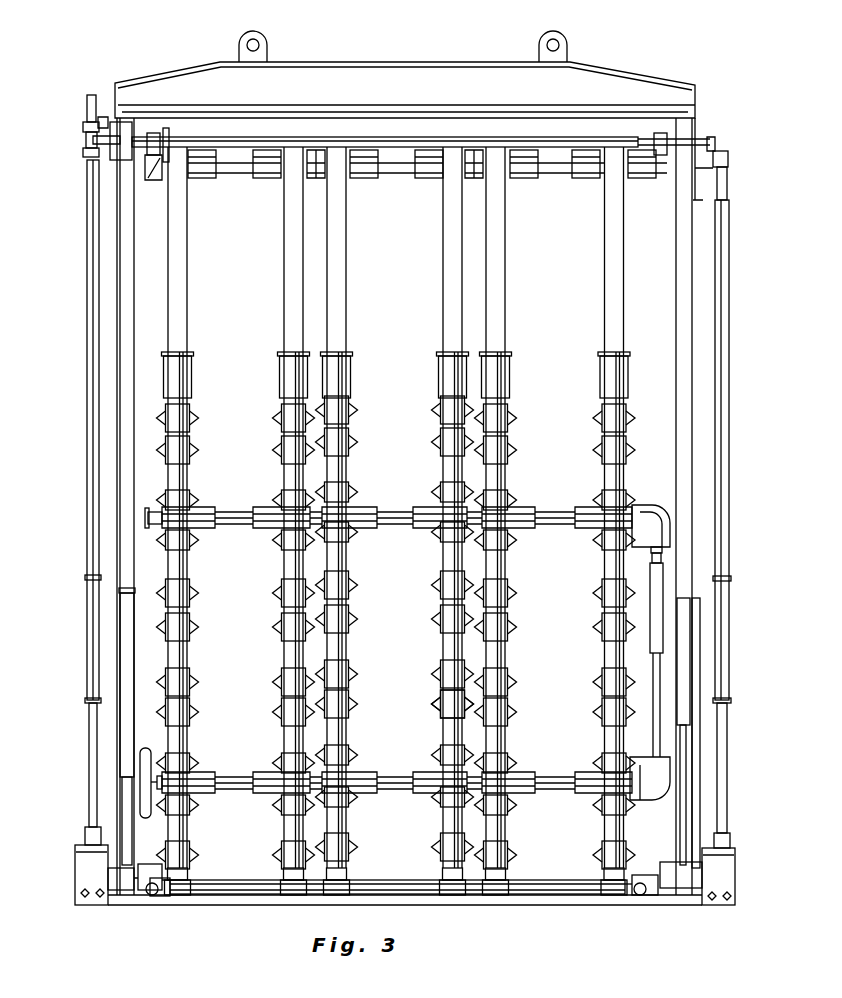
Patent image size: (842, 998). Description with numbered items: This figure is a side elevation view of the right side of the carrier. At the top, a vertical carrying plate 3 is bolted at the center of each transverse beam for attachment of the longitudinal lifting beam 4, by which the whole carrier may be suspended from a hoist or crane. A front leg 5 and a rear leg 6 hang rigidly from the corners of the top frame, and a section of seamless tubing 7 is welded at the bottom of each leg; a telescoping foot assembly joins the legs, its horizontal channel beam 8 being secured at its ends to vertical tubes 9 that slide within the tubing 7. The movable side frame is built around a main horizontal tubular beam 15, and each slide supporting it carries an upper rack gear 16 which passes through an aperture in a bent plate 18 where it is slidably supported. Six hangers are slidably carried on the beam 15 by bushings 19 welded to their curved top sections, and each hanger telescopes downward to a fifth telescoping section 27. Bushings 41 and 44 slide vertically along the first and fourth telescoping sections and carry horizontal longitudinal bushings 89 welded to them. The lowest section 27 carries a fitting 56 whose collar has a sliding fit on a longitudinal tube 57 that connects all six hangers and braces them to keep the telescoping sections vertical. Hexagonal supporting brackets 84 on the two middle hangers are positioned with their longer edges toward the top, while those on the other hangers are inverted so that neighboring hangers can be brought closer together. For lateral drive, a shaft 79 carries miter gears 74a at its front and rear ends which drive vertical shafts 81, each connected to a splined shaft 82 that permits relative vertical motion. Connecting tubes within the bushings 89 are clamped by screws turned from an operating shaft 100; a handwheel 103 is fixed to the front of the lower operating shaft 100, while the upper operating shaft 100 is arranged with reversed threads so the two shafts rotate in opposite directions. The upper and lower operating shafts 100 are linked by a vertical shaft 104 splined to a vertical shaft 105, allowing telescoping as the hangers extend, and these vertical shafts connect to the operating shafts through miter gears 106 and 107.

The vertical carrying plate 3 is at (697, 105).
The longitudinal lifting beam 4 is at (305, 62).
The front leg 5 is at (137, 345).
The rear leg 6 is at (690, 333).
The seamless tubing section 7 is at (130, 745).
The horizontal channel beam 8 is at (665, 900).
The vertical tube 9 is at (688, 833).
The main horizontal tubular beam 15 is at (241, 178).
The upper rack gear 16 is at (170, 155).
The bent plate 18 is at (178, 150).
The bushing 19 is at (201, 178).
The fifth telescoping section 27 is at (347, 876).
The bushing 41 is at (188, 543).
The bushing 44 is at (188, 757).
The fitting 56 is at (500, 893).
The longitudinal tube 57 is at (522, 887).
The miter gear 74a is at (85, 150).
The shaft 79 is at (282, 138).
The vertical shaft 81 is at (88, 570).
The splined shaft 82 is at (90, 718).
The hexagonal supporting bracket 84 is at (432, 712).
The horizontal longitudinal bushing 89 is at (417, 510).
The operating shaft 100 is at (165, 510).
The handwheel 103 is at (147, 815).
The vertical shaft 104 is at (648, 610).
The vertical shaft 105 is at (650, 657).
The miter gear 106 is at (652, 518).
The miter gear 107 is at (654, 778).